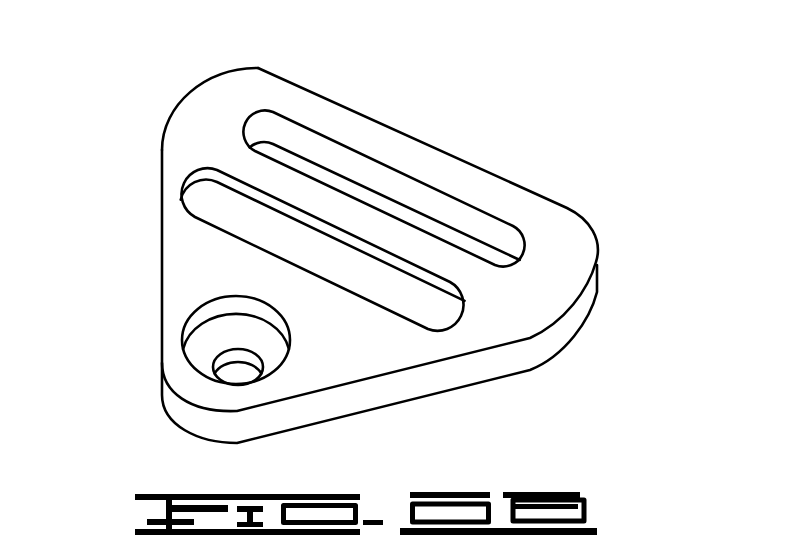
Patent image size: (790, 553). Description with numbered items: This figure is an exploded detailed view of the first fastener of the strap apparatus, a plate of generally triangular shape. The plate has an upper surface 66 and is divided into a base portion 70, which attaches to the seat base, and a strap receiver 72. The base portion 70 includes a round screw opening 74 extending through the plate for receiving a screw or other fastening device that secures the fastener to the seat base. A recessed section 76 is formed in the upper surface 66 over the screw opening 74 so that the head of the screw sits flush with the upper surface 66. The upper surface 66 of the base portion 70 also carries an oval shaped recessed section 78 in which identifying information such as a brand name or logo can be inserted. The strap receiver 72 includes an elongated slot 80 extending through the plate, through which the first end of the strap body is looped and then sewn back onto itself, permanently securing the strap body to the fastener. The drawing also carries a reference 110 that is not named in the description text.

The upper surface 66 is at (553, 267).
The base portion 70 is at (350, 360).
The strap receiver 72 is at (232, 97).
The screw opening 74 is at (237, 378).
The recessed section 76 is at (232, 327).
The oval shaped recessed section 78 is at (233, 213).
The elongated slot 80 is at (462, 218).
The slot opening 110 is at (347, 190).